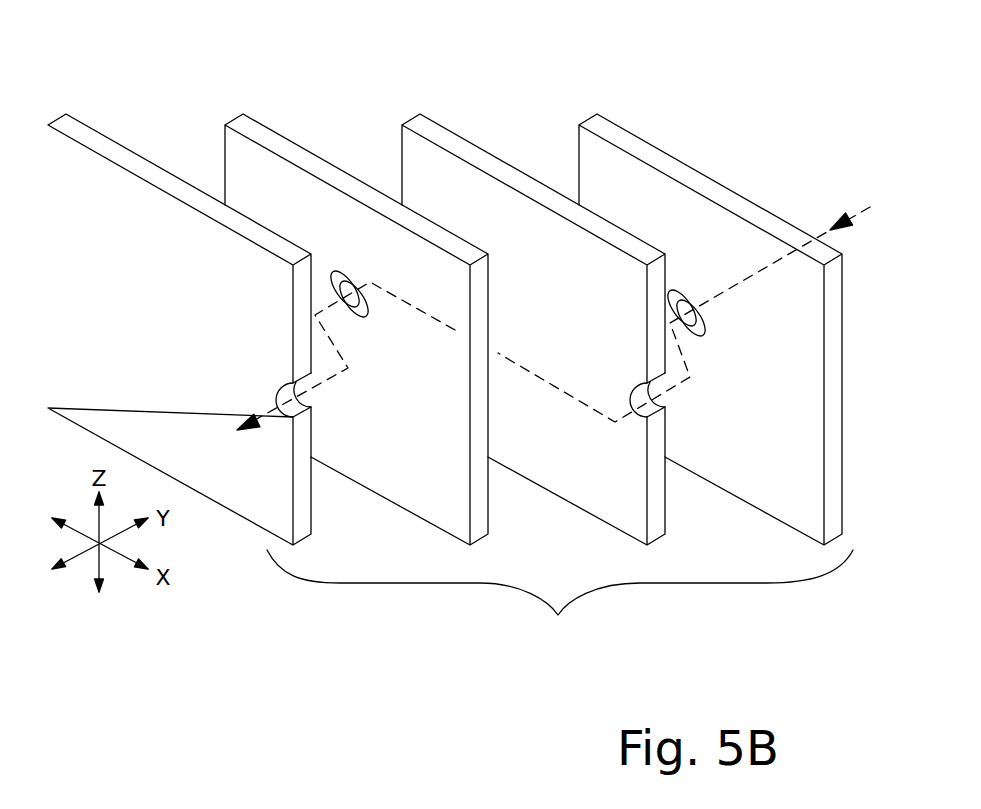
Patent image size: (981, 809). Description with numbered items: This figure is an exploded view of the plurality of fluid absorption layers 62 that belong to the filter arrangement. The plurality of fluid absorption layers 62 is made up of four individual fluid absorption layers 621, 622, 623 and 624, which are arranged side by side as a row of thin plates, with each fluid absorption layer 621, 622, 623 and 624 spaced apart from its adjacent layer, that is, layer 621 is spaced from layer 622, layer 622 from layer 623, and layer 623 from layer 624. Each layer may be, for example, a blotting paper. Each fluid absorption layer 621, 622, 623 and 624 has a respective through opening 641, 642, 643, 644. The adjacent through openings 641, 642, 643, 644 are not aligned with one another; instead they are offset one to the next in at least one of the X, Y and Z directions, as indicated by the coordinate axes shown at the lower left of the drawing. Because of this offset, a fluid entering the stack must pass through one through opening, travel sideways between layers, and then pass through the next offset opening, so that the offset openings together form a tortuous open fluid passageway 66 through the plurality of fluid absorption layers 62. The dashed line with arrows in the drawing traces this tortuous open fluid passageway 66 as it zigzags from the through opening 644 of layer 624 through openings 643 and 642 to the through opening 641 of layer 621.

The plurality of fluid absorption layers 62 is at (450, 344).
The fluid absorption layer 621 is at (118, 155).
The fluid absorption layer 622 is at (265, 137).
The fluid absorption layer 623 is at (428, 128).
The fluid absorption layer 624 is at (613, 133).
The through opening 641 is at (270, 406).
The through opening 642 is at (360, 273).
The through opening 643 is at (627, 388).
The through opening 644 is at (697, 296).
The tortuous open fluid passageway 66 is at (842, 217).